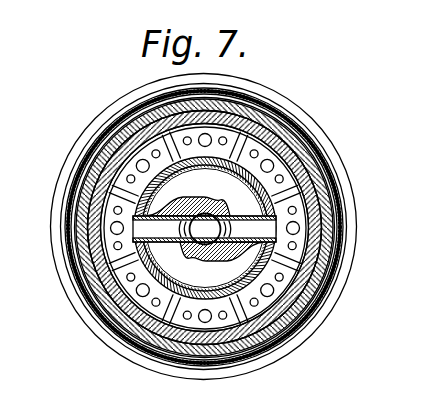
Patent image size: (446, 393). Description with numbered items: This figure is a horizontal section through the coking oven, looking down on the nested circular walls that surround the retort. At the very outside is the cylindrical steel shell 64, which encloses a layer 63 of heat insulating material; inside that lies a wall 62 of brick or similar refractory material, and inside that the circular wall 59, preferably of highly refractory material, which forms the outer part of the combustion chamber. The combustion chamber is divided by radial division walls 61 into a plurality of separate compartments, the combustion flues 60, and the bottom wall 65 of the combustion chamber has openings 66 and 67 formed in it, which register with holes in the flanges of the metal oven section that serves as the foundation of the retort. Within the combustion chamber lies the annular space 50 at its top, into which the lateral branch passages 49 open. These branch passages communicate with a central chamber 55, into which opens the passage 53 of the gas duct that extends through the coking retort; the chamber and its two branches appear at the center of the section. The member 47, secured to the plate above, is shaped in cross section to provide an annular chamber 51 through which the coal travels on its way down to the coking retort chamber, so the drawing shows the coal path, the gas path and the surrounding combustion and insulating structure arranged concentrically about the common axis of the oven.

The member 47 is at (220, 260).
The lateral branch passages 49 is at (204, 229).
The annular space 50 is at (221, 118).
The annular chamber 51 is at (205, 228).
The passage 53 is at (212, 196).
The chamber 55 is at (205, 229).
The circular wall 59 is at (345, 188).
The combustion flues 60 is at (102, 121).
The radial division walls 61 is at (128, 150).
The wall 62 is at (316, 162).
The layer of heat insulating material 63 is at (305, 144).
The cylindrical steel shell 64 is at (290, 114).
The bottom wall 65 is at (271, 300).
The openings 66 is at (292, 224).
The openings 67 is at (289, 203).